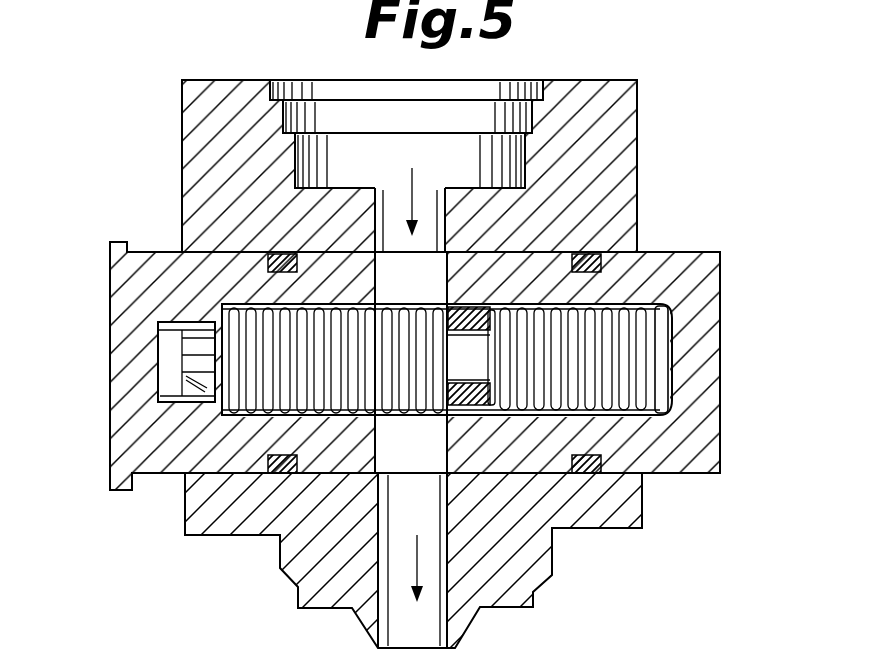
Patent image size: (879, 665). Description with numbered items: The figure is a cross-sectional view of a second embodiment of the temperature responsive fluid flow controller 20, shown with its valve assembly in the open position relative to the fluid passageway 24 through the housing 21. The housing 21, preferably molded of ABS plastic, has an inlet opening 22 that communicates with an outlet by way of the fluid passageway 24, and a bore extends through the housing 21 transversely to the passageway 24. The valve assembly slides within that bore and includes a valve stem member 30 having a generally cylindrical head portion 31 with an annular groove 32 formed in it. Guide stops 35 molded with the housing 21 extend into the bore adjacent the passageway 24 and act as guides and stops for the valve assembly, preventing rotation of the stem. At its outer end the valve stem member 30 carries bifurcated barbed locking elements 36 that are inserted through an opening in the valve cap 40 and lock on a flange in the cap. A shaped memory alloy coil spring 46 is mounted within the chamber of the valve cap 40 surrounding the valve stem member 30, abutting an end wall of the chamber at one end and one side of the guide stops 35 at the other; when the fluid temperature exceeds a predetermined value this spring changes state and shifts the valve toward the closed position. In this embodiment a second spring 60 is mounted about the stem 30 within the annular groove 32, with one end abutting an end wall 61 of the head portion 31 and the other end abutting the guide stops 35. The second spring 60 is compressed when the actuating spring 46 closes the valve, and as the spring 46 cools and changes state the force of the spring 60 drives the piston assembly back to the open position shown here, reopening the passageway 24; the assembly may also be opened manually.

The temperature responsive fluid flow controller 20 is at (210, 554).
The housing 21 is at (650, 538).
The inlet opening 22 is at (312, 92).
The fluid passageway 24 is at (393, 596).
The valve stem member 30 is at (520, 283).
The head portion 31 is at (705, 318).
The annular groove 32 is at (652, 416).
The guide stops 35 is at (452, 318).
The bifurcated barbed locking elements 36 is at (165, 378).
The valve cap 40 is at (128, 286).
The shaped memory alloy coil spring 46 is at (447, 458).
The second spring 60 is at (640, 358).
The end wall 61 is at (660, 302).